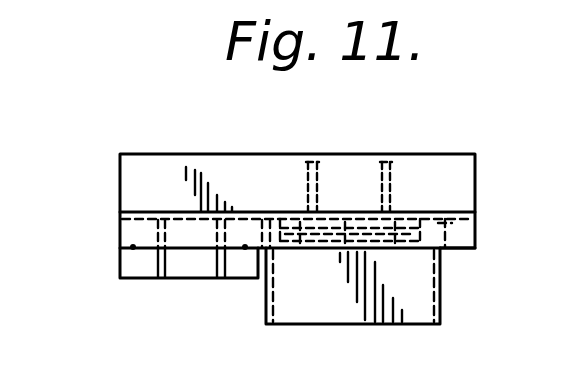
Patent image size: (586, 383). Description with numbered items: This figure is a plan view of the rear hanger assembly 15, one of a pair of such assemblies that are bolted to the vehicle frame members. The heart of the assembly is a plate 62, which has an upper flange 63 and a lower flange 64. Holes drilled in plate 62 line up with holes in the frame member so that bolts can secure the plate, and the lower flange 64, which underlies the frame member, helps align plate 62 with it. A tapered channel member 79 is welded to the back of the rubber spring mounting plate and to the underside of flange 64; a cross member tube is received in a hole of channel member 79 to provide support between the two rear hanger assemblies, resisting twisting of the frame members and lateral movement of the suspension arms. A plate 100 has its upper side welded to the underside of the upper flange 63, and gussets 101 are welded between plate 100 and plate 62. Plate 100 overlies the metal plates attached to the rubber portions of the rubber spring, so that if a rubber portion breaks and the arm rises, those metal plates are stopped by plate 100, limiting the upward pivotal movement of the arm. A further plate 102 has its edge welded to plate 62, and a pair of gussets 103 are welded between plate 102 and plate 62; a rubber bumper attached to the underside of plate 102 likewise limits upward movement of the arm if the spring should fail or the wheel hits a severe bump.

The rear hanger assembly 15 is at (466, 168).
The lower flange 64 is at (453, 128).
The tapered channel member 79 is at (380, 178).
The plate 62 is at (463, 221).
The upper flange 63 is at (462, 250).
The plate 100 is at (331, 318).
The gussets 101 is at (273, 300).
The plate 102 is at (128, 262).
The gussets 103 is at (167, 263).